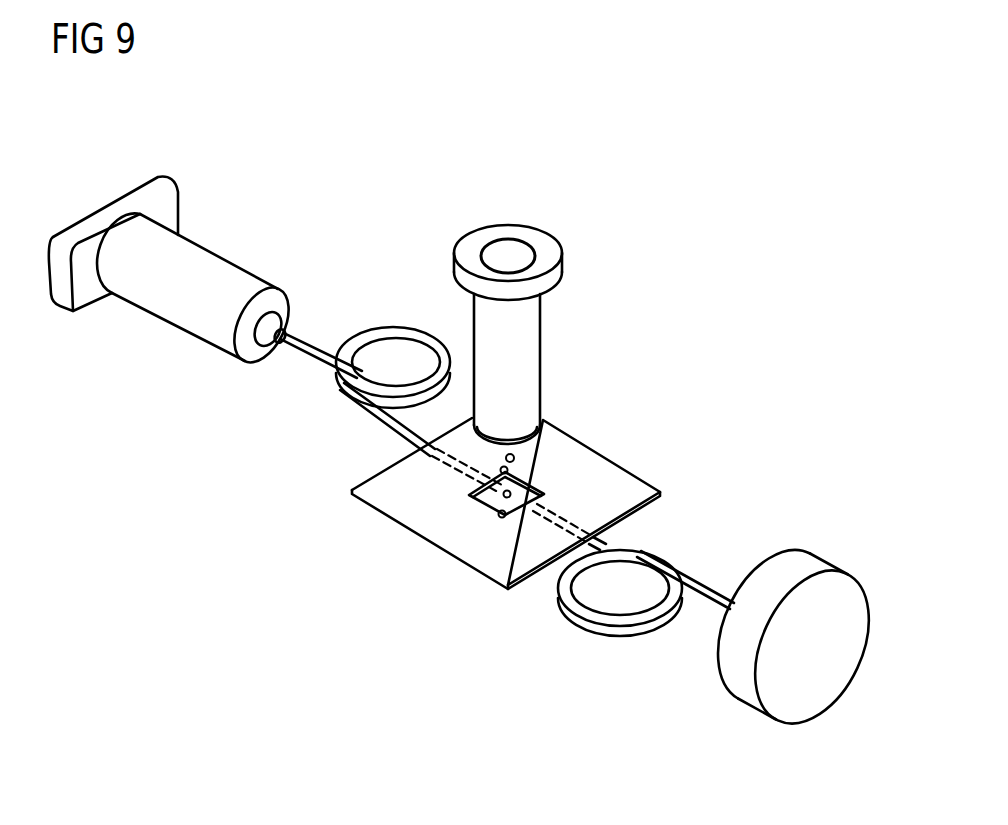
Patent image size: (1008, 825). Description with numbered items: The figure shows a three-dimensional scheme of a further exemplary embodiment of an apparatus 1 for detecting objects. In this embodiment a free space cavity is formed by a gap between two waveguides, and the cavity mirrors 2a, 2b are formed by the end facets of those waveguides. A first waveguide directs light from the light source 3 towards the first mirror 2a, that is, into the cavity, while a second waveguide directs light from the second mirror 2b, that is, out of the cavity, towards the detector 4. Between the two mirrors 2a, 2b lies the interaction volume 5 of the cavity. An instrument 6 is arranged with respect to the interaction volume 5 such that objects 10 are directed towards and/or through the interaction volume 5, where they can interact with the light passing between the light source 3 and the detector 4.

The apparatus 1 is at (84, 154).
The first mirror 2a is at (468, 502).
The second mirror 2b is at (507, 519).
The light source 3 is at (194, 319).
The detector 4 is at (728, 665).
The interaction volume 5 is at (536, 486).
The instrument 6 is at (525, 340).
The objects 10 is at (514, 455).